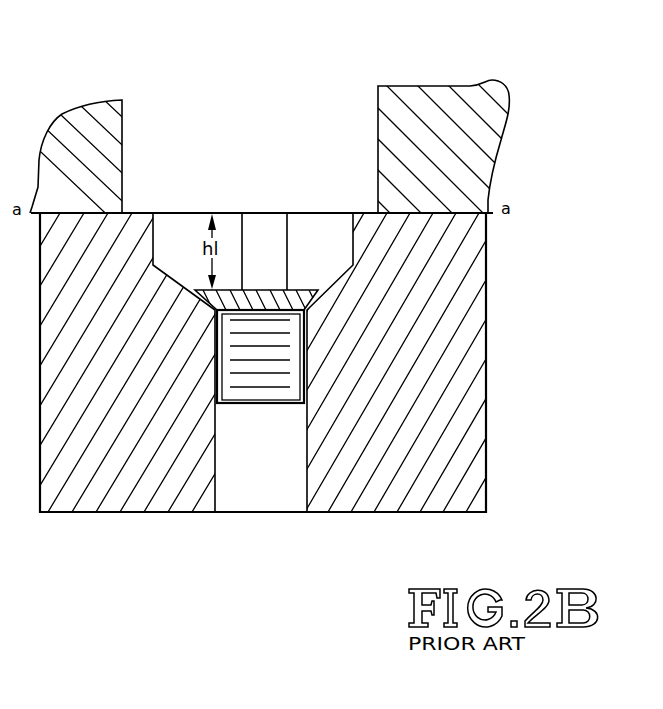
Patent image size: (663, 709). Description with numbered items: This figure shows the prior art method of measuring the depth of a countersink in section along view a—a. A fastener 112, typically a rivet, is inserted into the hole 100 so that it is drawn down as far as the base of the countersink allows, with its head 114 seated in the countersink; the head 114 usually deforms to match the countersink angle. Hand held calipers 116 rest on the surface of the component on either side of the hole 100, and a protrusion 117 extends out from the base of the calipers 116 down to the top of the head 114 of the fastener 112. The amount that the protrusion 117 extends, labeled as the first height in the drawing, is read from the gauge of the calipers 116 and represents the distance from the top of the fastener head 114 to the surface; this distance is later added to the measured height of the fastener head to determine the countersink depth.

The hole 100 is at (282, 481).
The fastener 112 is at (305, 382).
The head 114 is at (308, 289).
The calipers 116 is at (381, 131).
The protrusion 117 is at (273, 253).